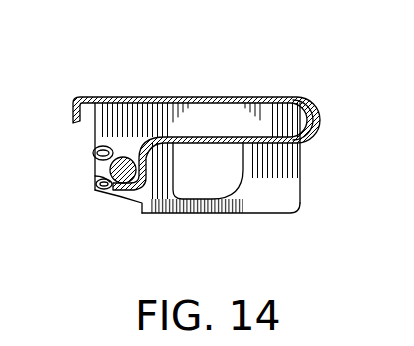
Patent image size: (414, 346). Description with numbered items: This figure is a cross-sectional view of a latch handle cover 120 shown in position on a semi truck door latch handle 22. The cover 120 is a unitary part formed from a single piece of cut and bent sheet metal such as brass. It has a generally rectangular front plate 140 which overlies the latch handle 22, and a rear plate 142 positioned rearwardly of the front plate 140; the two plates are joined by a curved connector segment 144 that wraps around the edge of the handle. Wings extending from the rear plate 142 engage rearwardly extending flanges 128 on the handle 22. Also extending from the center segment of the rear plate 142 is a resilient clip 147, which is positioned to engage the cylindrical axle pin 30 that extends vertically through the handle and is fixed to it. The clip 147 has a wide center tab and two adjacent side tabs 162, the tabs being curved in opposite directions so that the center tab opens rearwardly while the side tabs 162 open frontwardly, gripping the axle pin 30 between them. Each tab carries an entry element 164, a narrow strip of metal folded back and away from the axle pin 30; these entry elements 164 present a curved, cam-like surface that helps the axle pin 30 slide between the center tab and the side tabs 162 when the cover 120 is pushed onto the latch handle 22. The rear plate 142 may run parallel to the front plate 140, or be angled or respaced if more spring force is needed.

The latch handle cover 120 is at (283, 66).
The front plate 140 is at (207, 97).
The curved connector segment 144 is at (323, 121).
The rearwardly extending flanges 128 is at (300, 177).
The rear plate 142 is at (258, 143).
The door latch handle 22 is at (283, 211).
The resilient clip 147 is at (142, 204).
The side tabs 162 is at (94, 148).
The entry element 164 is at (110, 166).
The axle pin 30 is at (95, 176).